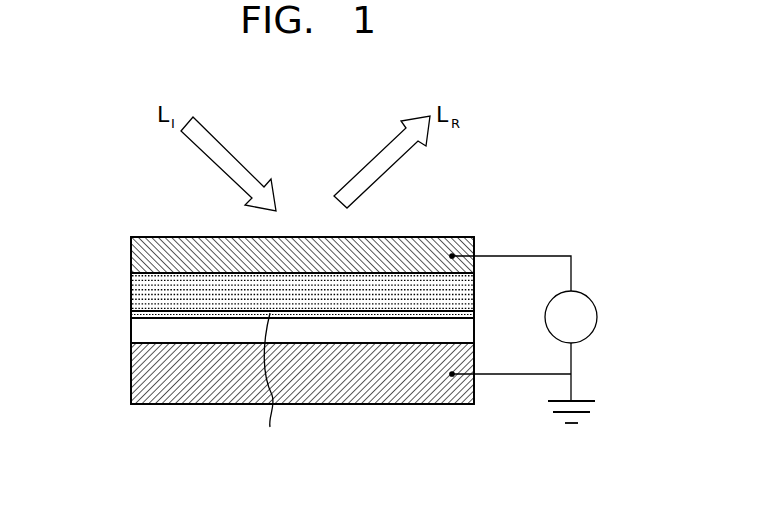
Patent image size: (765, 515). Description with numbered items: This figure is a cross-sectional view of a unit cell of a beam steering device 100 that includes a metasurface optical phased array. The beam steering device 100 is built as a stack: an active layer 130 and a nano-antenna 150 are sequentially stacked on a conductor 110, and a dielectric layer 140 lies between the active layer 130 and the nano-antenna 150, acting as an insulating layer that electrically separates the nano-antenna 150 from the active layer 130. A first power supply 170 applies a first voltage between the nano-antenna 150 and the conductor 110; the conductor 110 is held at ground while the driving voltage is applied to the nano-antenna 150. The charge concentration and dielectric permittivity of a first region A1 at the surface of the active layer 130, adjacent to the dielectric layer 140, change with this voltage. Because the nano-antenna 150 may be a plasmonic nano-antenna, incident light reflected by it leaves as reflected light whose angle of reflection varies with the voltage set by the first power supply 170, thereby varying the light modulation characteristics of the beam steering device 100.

The beam steering device 100 is at (385, 260).
The conductor 110 is at (131, 374).
The active layer 130 is at (143, 332).
The dielectric layer 140 is at (131, 288).
The nano-antenna 150 is at (131, 257).
The first power supply 170 is at (590, 298).
The first region A1 is at (269, 385).